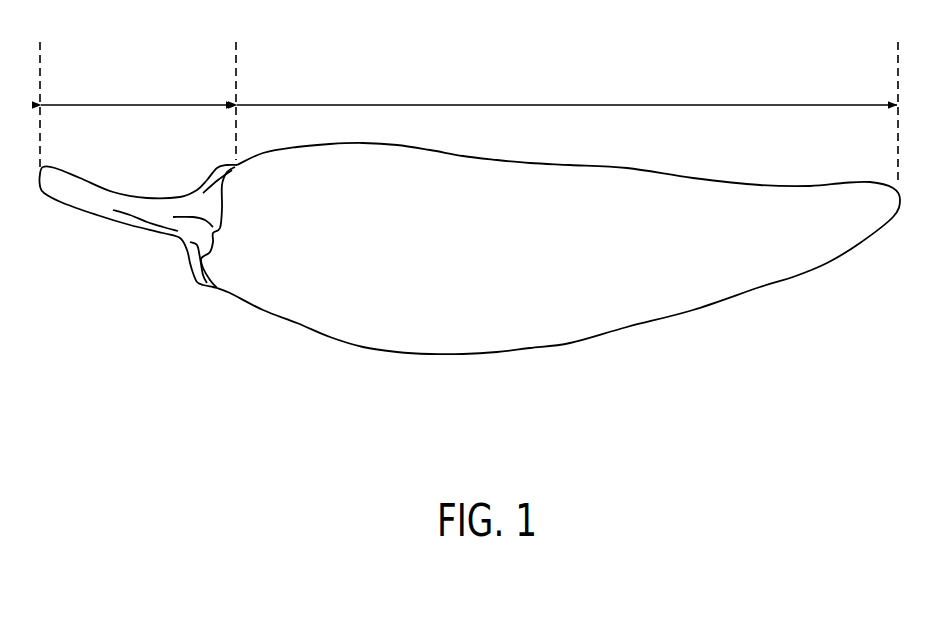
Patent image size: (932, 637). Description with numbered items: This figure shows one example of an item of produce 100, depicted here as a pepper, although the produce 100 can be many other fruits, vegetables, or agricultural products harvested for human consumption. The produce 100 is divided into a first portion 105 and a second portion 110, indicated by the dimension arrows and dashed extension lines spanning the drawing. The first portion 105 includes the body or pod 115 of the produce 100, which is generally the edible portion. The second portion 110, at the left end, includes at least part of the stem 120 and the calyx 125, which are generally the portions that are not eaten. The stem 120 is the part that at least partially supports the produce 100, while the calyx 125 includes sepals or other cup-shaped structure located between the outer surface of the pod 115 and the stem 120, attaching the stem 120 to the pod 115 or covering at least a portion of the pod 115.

The produce 100 is at (262, 392).
The first portion 105 is at (528, 103).
The second portion 110 is at (140, 103).
The pod 115 is at (452, 342).
The stem 120 is at (95, 208).
The calyx 125 is at (197, 268).